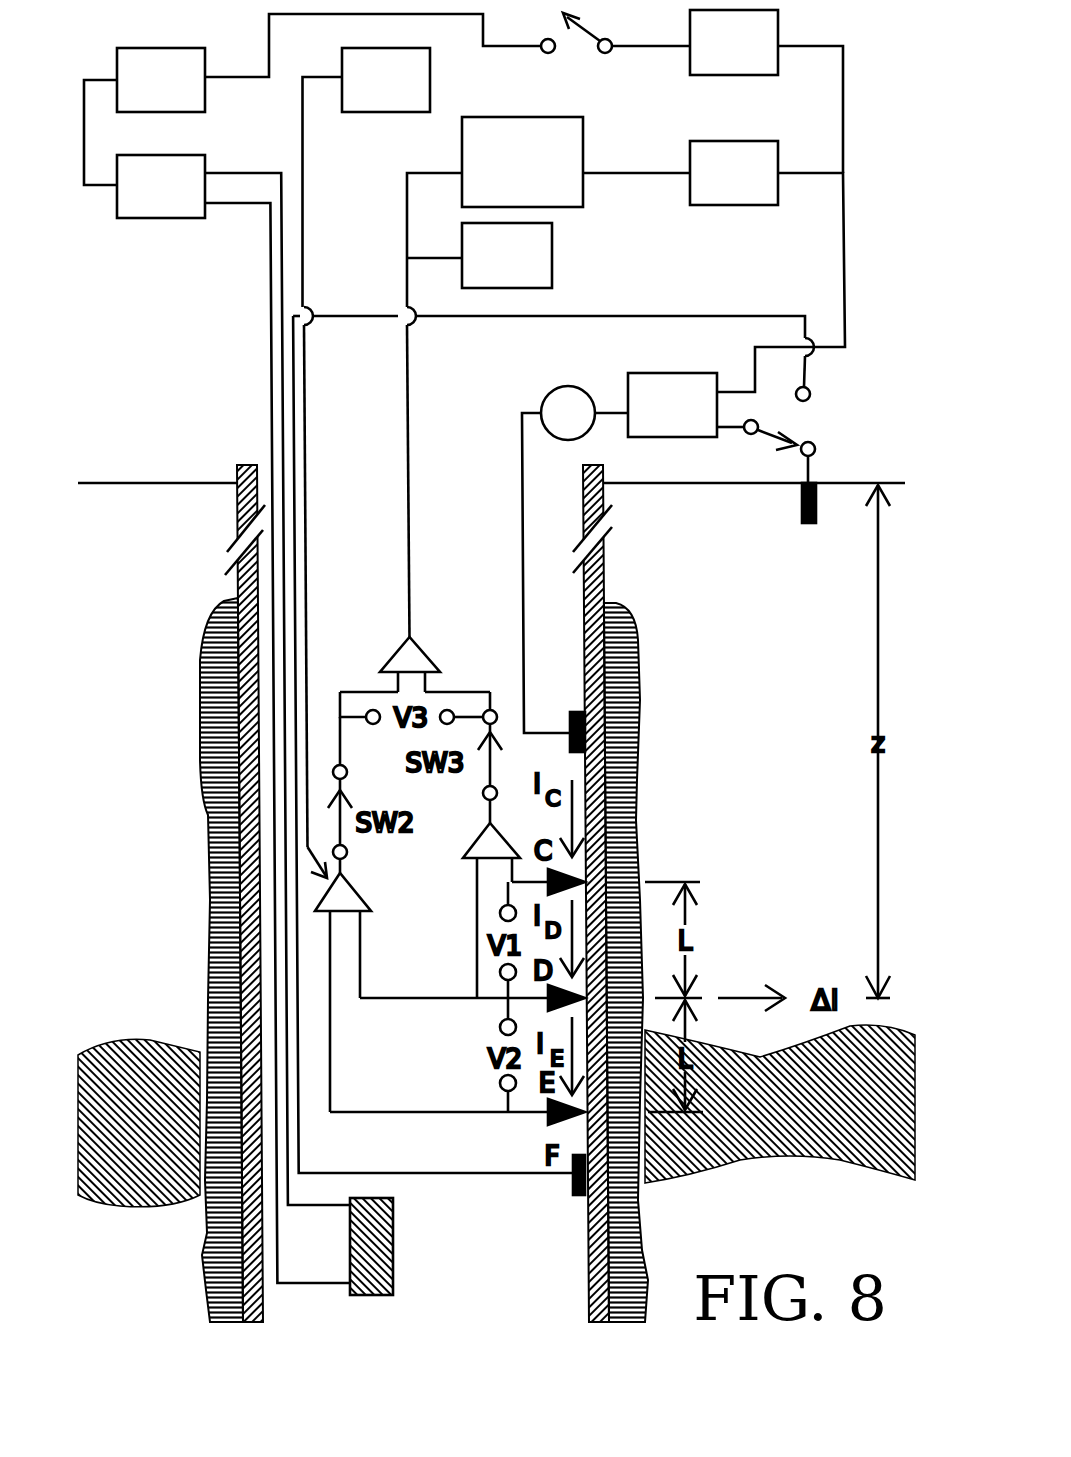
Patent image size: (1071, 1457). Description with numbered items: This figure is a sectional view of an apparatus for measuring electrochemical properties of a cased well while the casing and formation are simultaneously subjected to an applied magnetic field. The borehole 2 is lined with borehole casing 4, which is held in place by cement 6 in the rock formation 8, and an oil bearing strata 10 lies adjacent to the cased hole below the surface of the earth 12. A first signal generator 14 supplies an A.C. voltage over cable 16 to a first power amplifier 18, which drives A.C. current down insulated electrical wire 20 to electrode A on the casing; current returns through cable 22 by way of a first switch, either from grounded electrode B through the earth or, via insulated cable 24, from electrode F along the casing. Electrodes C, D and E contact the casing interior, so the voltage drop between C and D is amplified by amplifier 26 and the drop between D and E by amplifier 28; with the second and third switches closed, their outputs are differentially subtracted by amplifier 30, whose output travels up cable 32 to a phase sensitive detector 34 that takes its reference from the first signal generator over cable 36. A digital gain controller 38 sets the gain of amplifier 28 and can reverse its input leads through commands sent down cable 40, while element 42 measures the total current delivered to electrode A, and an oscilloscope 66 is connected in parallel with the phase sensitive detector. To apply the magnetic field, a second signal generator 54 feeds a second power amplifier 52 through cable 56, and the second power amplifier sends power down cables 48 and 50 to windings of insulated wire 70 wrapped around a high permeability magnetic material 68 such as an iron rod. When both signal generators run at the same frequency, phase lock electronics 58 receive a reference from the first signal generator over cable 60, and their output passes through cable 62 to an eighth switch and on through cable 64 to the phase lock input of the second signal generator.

The borehole 2 is at (560, 1210).
The borehole casing 4 is at (596, 1238).
The cement 6 is at (632, 1220).
The rock formation 8 is at (790, 1193).
The oil bearing strata 10 is at (868, 1133).
The surface of the earth 12 is at (640, 486).
The signal generator 14 is at (740, 141).
The cable 16 is at (843, 300).
The power amplifier 18 is at (628, 393).
The insulated electrical wire 20 is at (522, 445).
The cable 22 is at (733, 438).
The insulated cable 24 is at (680, 315).
The amplifier 26 is at (470, 838).
The amplifier 28 is at (357, 892).
The amplifier 30 is at (430, 657).
The cable 32 is at (408, 516).
The phase sensitive detector 34 is at (525, 117).
The cable 36 is at (608, 174).
The digital gain controller 38 is at (405, 112).
The cable 40 is at (304, 400).
The current measuring element 42 is at (548, 398).
The cable 48 is at (270, 310).
The cable 50 is at (281, 272).
The second power amplifier 52 is at (150, 218).
The second signal generator 54 is at (175, 48).
The cable 56 is at (84, 128).
The phase lock electronics 58 is at (745, 75).
The cable 60 is at (843, 103).
The cable 62 is at (642, 47).
The cable 64 is at (215, 78).
The oscilloscope 66 is at (552, 255).
The high permeability magnetic material 68 is at (393, 1285).
The windings of insulated wire 70 is at (393, 1218).